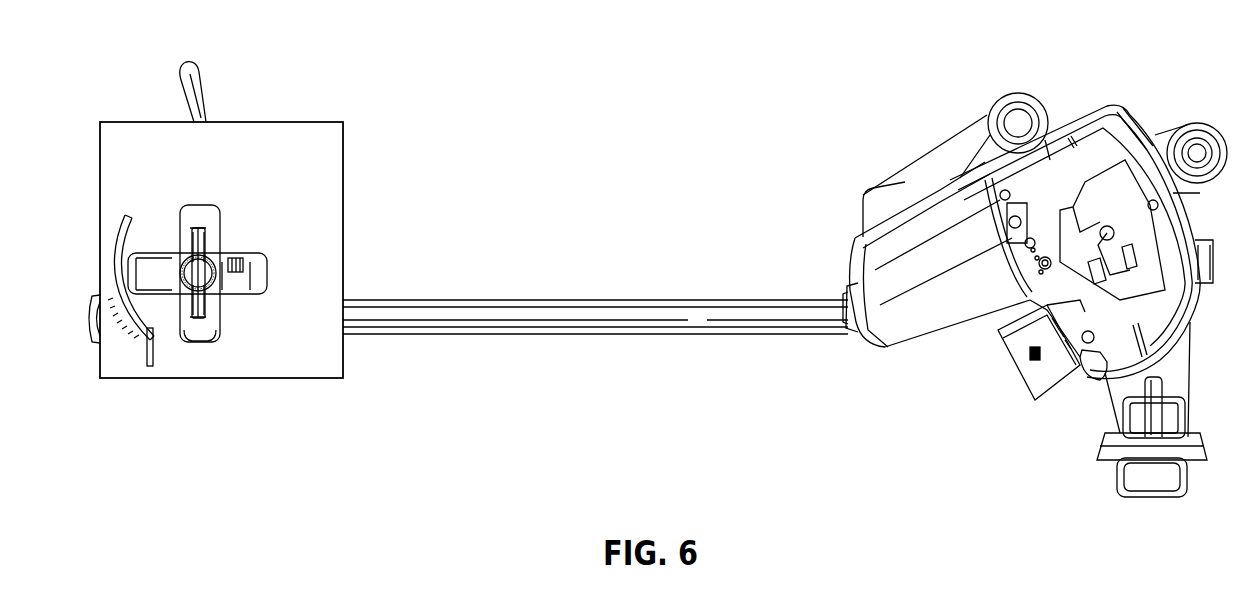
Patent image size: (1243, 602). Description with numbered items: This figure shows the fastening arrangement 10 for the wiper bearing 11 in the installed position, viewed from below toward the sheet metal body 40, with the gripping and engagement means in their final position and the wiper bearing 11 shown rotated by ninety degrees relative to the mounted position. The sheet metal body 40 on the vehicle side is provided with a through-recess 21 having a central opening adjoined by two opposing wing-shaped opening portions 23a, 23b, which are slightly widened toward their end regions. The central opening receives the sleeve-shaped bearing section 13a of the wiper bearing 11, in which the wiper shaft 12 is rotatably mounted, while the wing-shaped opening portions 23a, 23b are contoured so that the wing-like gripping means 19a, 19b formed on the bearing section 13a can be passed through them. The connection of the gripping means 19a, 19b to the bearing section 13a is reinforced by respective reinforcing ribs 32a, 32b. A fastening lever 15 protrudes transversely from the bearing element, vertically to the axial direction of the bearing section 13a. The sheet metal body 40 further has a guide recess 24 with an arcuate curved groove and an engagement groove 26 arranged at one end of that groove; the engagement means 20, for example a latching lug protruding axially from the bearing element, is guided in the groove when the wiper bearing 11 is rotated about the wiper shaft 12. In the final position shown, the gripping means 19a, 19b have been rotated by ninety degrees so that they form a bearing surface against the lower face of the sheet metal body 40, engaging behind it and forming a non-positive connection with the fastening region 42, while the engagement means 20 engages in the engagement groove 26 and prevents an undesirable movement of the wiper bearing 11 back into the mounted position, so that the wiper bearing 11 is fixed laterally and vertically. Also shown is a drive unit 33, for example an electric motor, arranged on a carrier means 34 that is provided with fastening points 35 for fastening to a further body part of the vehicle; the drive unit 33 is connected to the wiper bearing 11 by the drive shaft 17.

The fastening arrangement 10 is at (270, 93).
The wiper bearing 11 is at (240, 287).
The wiper shaft 12 is at (168, 258).
The bearing section 13a is at (222, 292).
The fastening lever 15 is at (190, 60).
The drive shaft 17 is at (635, 312).
The gripping means 19a is at (205, 213).
The gripping means 19b is at (195, 337).
The engagement means 20 is at (152, 345).
The through-recess 21 is at (170, 294).
The wing-shaped opening portion 23a is at (140, 262).
The wing-shaped opening portion 23b is at (258, 267).
The guide recess 24 is at (198, 273).
The engagement groove 26 is at (145, 357).
The reinforcing rib 32a is at (205, 232).
The reinforcing rib 32b is at (202, 322).
The drive unit 33 is at (917, 248).
The carrier means 34 is at (907, 193).
The fastening points 35 is at (1018, 118).
The sheet metal body 40 is at (298, 167).
The fastening region 42 is at (170, 205).